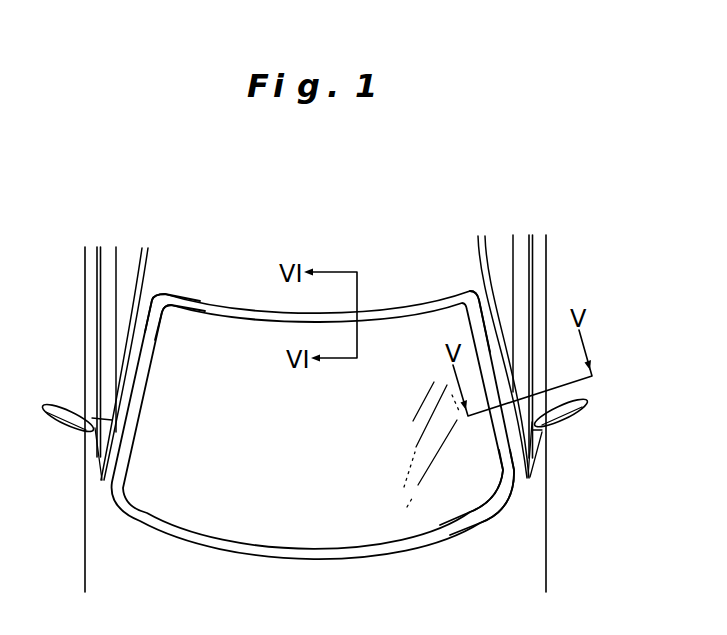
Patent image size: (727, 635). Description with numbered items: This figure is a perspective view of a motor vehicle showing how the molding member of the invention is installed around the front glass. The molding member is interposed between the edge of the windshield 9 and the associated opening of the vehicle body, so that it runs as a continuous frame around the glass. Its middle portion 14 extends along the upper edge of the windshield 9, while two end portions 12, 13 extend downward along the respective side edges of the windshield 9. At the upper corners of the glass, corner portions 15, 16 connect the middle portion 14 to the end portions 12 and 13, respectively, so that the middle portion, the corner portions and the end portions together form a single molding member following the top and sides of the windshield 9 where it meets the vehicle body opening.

The windshield 9 is at (317, 520).
The end portion 12 is at (131, 362).
The end portion 13 is at (520, 463).
The middle portion 14 is at (393, 310).
The corner portion 15 is at (156, 293).
The corner portion 16 is at (477, 293).